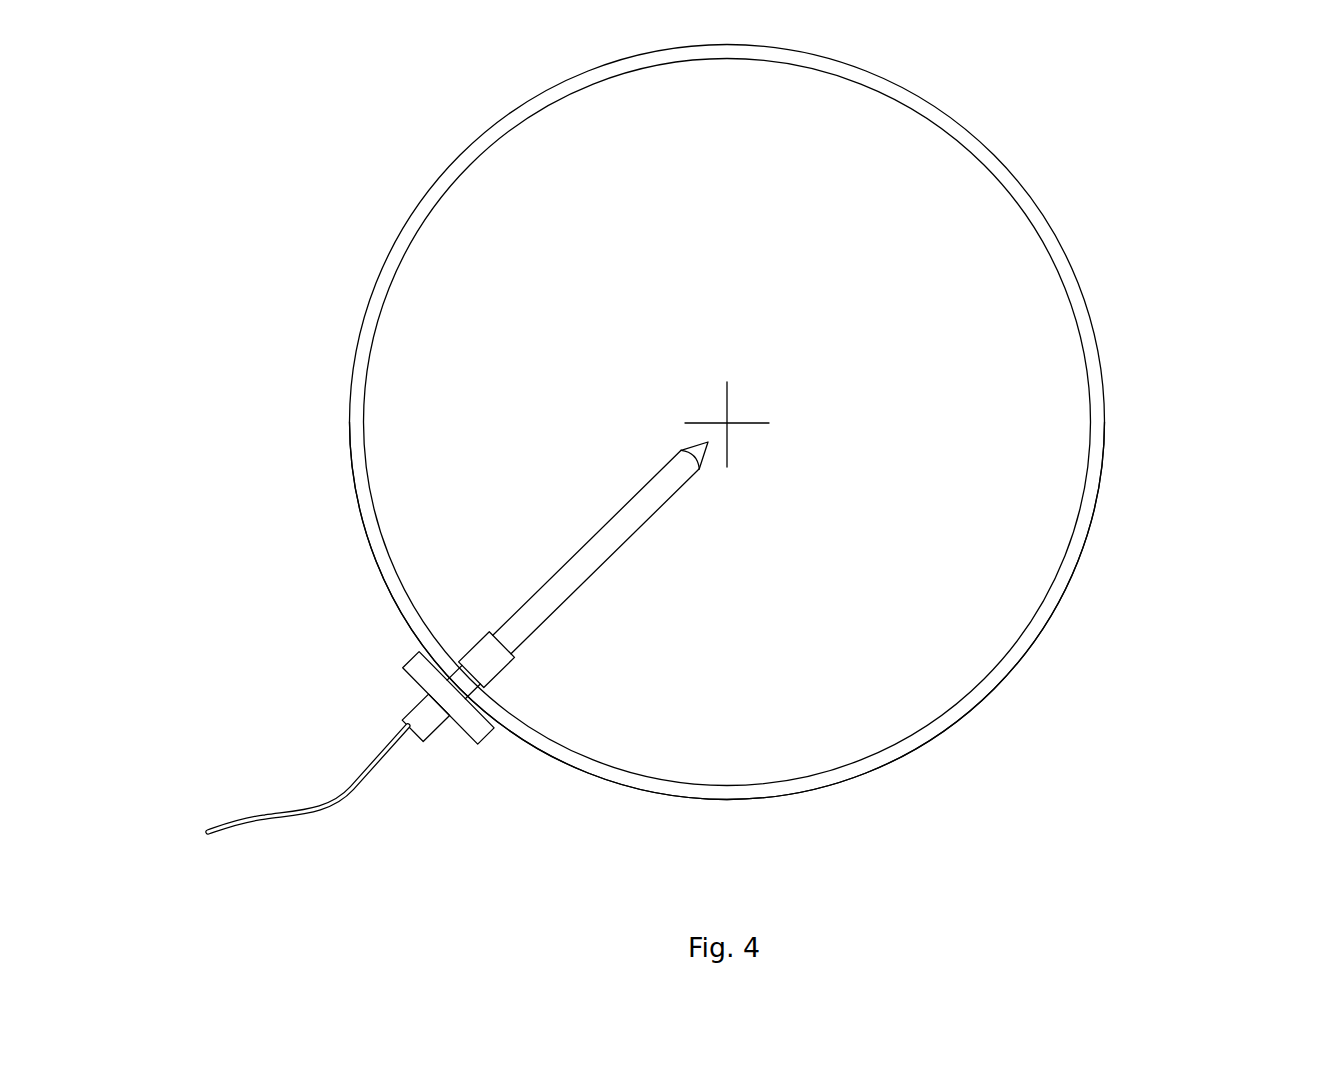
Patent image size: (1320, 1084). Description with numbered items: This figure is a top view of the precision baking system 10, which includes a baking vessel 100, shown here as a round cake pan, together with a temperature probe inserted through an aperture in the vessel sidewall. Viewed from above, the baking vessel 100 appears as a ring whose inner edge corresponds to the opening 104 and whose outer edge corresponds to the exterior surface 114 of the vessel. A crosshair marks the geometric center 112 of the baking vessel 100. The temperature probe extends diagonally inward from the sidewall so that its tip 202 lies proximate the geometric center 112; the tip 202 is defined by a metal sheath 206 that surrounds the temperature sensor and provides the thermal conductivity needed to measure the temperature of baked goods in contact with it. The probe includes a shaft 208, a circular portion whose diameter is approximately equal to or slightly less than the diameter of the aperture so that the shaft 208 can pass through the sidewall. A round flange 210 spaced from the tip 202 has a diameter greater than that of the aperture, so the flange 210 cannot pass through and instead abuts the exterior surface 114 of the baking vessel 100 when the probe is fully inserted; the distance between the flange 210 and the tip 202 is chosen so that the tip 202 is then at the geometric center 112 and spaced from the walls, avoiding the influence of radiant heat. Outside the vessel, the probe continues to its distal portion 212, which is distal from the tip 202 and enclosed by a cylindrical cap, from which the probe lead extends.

The precision baking system 10 is at (252, 182).
The baking vessel 100 is at (1127, 162).
The opening 104 is at (1042, 448).
The geometric center 112 is at (745, 423).
The exterior surface 114 is at (650, 795).
The tip 202 is at (708, 442).
The metal sheath 206 is at (618, 537).
The shaft 208 is at (493, 663).
The flange 210 is at (470, 718).
The distal portion 212 is at (407, 718).